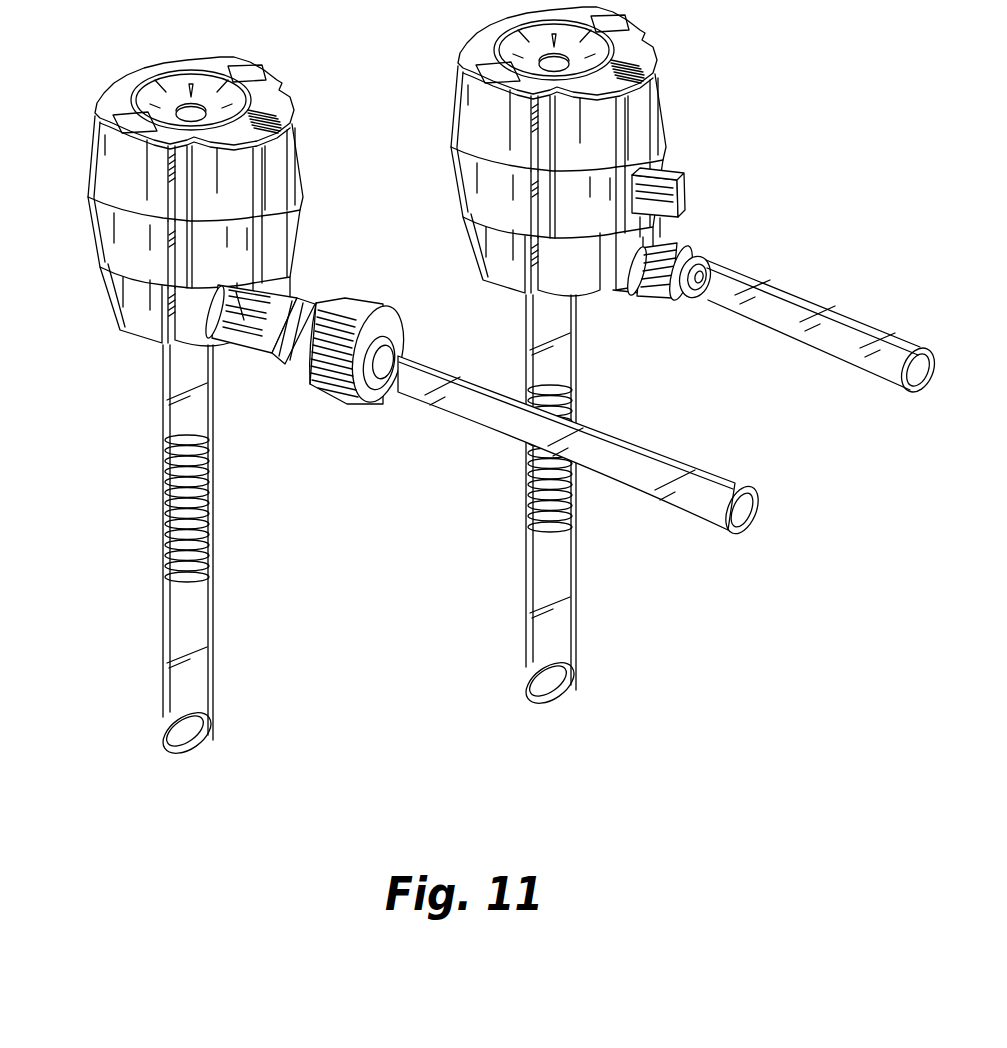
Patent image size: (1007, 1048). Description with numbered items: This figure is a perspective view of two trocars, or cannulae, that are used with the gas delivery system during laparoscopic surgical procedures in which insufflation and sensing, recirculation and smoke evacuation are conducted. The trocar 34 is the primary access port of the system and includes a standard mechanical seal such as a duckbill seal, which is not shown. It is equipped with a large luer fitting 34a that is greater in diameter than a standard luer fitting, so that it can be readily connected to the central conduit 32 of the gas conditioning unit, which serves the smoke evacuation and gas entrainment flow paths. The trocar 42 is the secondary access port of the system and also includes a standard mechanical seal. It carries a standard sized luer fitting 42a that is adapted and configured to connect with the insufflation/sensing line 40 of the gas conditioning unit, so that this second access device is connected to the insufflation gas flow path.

The trocar 34 is at (100, 243).
The large luer fitting 34a is at (330, 396).
The central conduit 32 is at (683, 512).
The trocar 42 is at (664, 143).
The standard sized luer fitting 42a is at (655, 298).
The insufflation/sensing line 40 is at (856, 371).